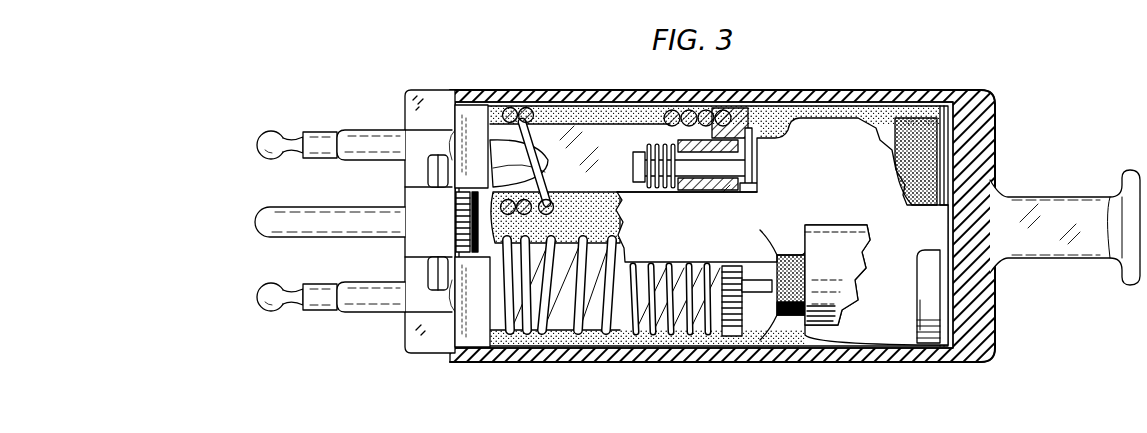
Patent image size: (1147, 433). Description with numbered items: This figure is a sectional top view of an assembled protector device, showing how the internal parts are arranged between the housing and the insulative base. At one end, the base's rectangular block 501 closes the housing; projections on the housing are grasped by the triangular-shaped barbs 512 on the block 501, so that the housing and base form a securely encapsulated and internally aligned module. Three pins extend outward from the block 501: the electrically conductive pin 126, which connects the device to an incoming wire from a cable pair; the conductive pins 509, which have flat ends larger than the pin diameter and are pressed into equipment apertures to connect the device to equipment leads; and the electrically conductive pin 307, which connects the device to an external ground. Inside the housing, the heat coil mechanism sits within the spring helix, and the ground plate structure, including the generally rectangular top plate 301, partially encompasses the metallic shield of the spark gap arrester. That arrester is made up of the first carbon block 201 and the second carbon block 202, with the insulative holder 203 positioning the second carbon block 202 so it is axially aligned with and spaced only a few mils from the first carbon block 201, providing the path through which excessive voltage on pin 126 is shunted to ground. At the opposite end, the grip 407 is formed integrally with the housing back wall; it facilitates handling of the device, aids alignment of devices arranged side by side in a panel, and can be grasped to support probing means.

The electrically conductive pin 126 is at (270, 138).
The conductive pin 509 is at (376, 143).
The triangular-shaped barb 512 is at (406, 175).
The electrically conductive pin 307 is at (256, 222).
The rectangular block 501 is at (412, 348).
The top plate 301 is at (832, 128).
The first carbon block 201 is at (922, 130).
The second carbon block 202 is at (790, 318).
The insulative holder 203 is at (824, 305).
The grip 407 is at (1070, 215).